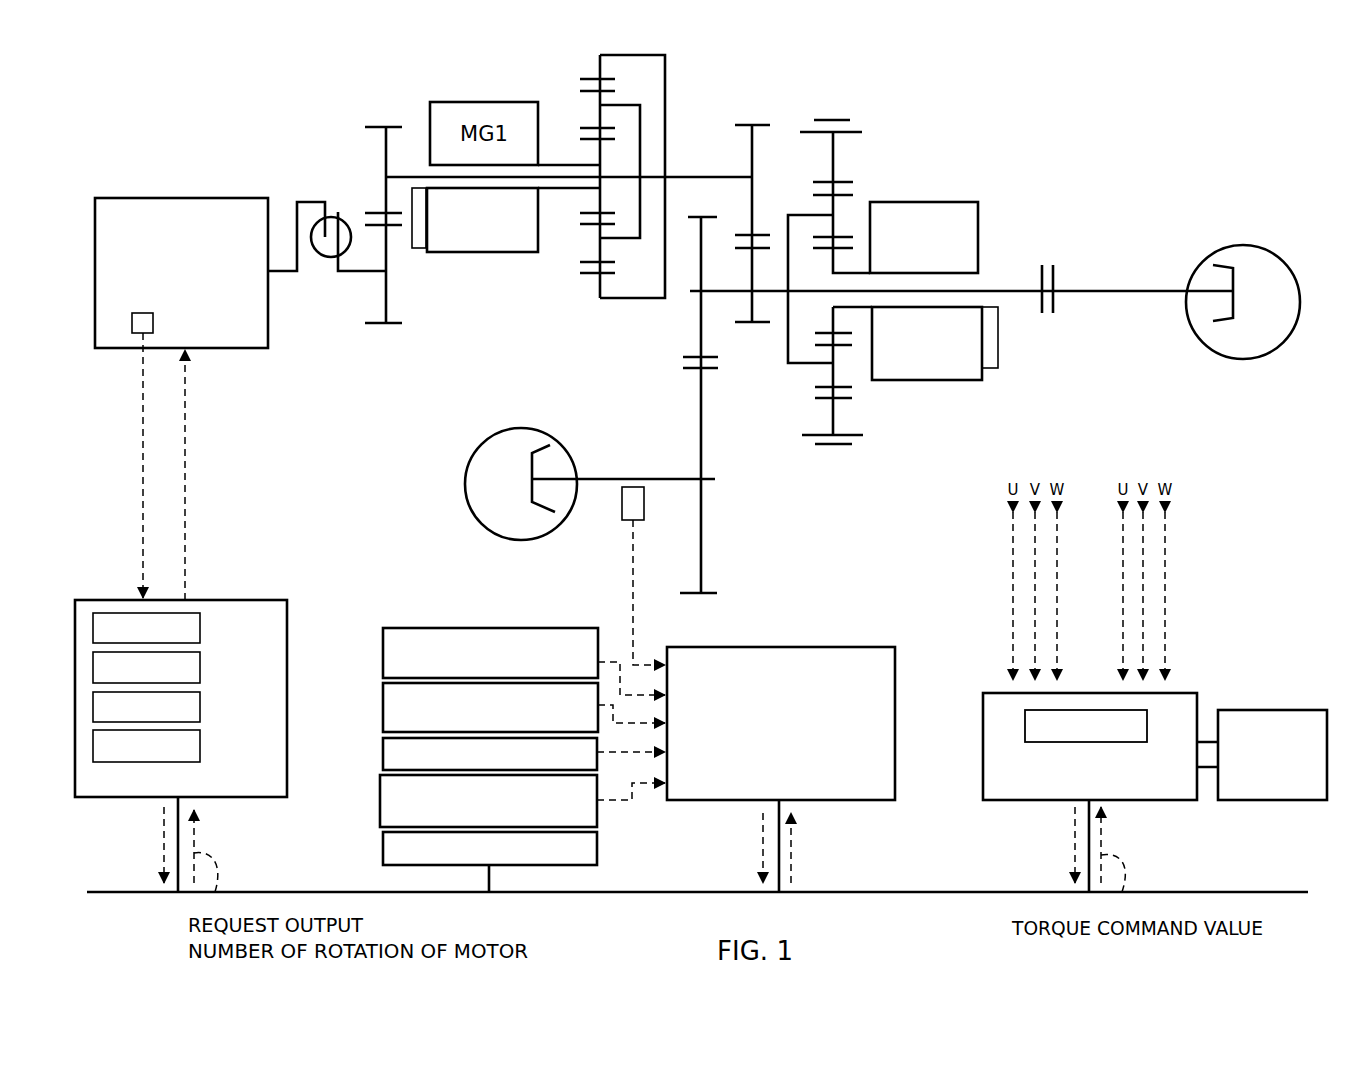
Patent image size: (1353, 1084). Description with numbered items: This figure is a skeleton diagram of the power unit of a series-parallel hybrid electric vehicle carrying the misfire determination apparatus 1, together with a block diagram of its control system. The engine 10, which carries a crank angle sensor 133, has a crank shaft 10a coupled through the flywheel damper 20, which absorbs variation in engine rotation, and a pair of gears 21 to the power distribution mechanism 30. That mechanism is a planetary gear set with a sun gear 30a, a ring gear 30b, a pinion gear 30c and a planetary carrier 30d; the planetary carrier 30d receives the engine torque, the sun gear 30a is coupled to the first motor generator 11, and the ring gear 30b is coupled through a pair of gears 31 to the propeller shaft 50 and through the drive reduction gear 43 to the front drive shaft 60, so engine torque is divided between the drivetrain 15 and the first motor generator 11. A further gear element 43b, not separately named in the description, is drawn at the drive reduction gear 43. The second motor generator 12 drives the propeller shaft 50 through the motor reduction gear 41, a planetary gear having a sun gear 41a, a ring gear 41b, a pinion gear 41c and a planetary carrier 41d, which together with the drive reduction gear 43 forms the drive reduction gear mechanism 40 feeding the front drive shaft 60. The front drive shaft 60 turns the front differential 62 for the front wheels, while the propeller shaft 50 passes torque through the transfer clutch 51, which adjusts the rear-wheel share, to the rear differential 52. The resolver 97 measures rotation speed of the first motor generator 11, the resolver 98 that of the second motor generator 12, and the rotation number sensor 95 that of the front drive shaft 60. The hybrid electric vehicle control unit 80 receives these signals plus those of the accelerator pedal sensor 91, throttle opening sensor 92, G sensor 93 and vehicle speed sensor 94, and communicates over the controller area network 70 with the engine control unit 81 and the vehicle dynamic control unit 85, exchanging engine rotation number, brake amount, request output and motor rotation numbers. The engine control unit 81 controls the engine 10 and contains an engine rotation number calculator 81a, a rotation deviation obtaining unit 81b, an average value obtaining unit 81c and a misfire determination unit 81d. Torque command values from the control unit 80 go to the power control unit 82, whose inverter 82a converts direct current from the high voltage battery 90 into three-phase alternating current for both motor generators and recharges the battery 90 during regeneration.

The misfire determination apparatus 1 is at (312, 452).
The engine 10 is at (185, 197).
The crank shaft 10a is at (280, 271).
The first motor generator 11 is at (488, 253).
The second motor generator 12 is at (937, 202).
The drivetrain 15 is at (790, 112).
The flywheel damper 20 is at (331, 217).
The pair of gears 21 is at (367, 157).
The power distribution mechanism 30 is at (573, 100).
The sun gear 30a is at (593, 198).
The ring gear 30b is at (597, 288).
The pinion gear 30c is at (593, 243).
The planetary carrier 30d is at (640, 190).
The pair of gears 31 is at (728, 138).
The drive reduction gear mechanism 40 is at (848, 113).
The motor reduction gear 41 is at (865, 147).
The sun gear 41a is at (845, 320).
The ring gear 41b is at (836, 166).
The pinion gear 41c is at (838, 372).
The planetary carrier 41d is at (787, 323).
The drive reduction gear 43 is at (670, 343).
The differential ring gear 43b is at (702, 523).
The propeller shaft 50 is at (1018, 297).
The transfer clutch 51 is at (1052, 260).
The rear differential 52 is at (1227, 247).
The front drive shaft 60 is at (628, 477).
The front differential 62 is at (466, 483).
The controller area network 70 is at (978, 890).
The hybrid electric vehicle control unit 80 is at (852, 800).
The engine control unit 81 is at (252, 797).
The engine rotation number calculator 81a is at (200, 627).
The rotation deviation obtaining unit 81b is at (200, 667).
The average value obtaining unit 81c is at (200, 706).
The misfire determination unit 81d is at (200, 744).
The power control unit 82 is at (1155, 800).
The inverter 82a is at (1025, 725).
The vehicle dynamic control unit 85 is at (383, 854).
The high voltage battery 90 is at (1272, 800).
The accelerator pedal sensor 91 is at (383, 662).
The throttle opening sensor 92 is at (383, 709).
The G sensor 93 is at (383, 757).
The vehicle speed sensor 94 is at (380, 802).
The rotation number sensor 95 is at (622, 512).
The resolver 97 is at (420, 250).
The resolver 98 is at (988, 368).
The crank angle sensor 133 is at (153, 323).